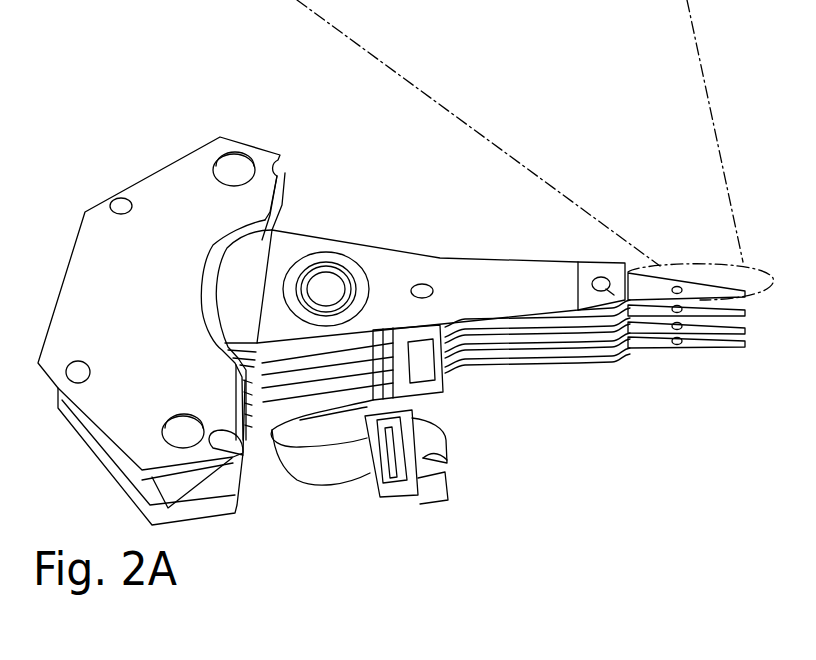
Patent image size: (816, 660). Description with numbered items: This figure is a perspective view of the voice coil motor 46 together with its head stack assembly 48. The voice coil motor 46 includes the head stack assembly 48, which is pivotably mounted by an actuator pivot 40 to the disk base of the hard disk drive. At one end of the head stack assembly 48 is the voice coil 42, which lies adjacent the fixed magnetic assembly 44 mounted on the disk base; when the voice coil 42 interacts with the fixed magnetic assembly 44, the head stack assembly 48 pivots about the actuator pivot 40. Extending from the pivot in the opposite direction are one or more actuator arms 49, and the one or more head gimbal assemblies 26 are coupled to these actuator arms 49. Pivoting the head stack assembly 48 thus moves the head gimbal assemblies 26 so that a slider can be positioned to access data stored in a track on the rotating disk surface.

The voice coil motor 46 is at (214, 92).
The fixed magnetic assembly 44 is at (159, 331).
The voice coil 42 is at (298, 178).
The actuator arm 49 is at (497, 288).
The actuator pivot 40 is at (327, 288).
The head gimbal assembly 26 is at (712, 348).
The head stack assembly 48 is at (762, 512).